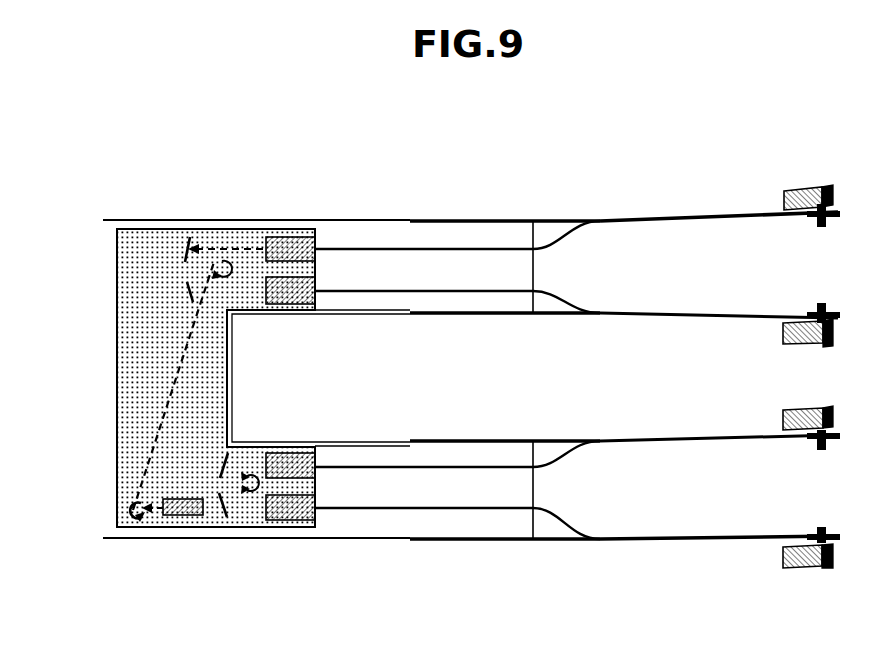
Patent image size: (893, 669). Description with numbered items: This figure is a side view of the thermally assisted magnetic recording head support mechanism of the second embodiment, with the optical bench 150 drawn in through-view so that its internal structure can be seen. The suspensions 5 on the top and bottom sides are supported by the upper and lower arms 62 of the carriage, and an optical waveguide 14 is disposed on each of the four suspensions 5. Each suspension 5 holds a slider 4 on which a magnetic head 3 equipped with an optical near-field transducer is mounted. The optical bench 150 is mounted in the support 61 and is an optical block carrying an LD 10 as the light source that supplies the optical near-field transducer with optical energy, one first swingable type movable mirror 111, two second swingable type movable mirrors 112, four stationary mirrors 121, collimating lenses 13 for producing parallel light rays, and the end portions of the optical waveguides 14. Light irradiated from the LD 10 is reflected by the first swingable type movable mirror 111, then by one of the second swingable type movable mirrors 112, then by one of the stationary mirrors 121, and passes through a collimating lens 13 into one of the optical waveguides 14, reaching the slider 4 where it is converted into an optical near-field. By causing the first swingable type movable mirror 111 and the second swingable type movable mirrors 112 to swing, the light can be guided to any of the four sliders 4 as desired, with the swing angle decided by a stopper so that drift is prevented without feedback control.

The magnetic head 3 is at (827, 189).
The slider 4 is at (795, 192).
The suspension 5 is at (697, 216).
The LD 10 is at (175, 518).
The collimating lens 13 is at (298, 237).
The optical waveguide 14 is at (577, 230).
The support 61 is at (103, 240).
The arm 62 is at (380, 233).
The first swingable type movable mirror 111 is at (132, 522).
The second swingable type movable mirror 112 is at (242, 253).
The stationary mirror 121 is at (192, 232).
The optical bench 150 is at (143, 237).